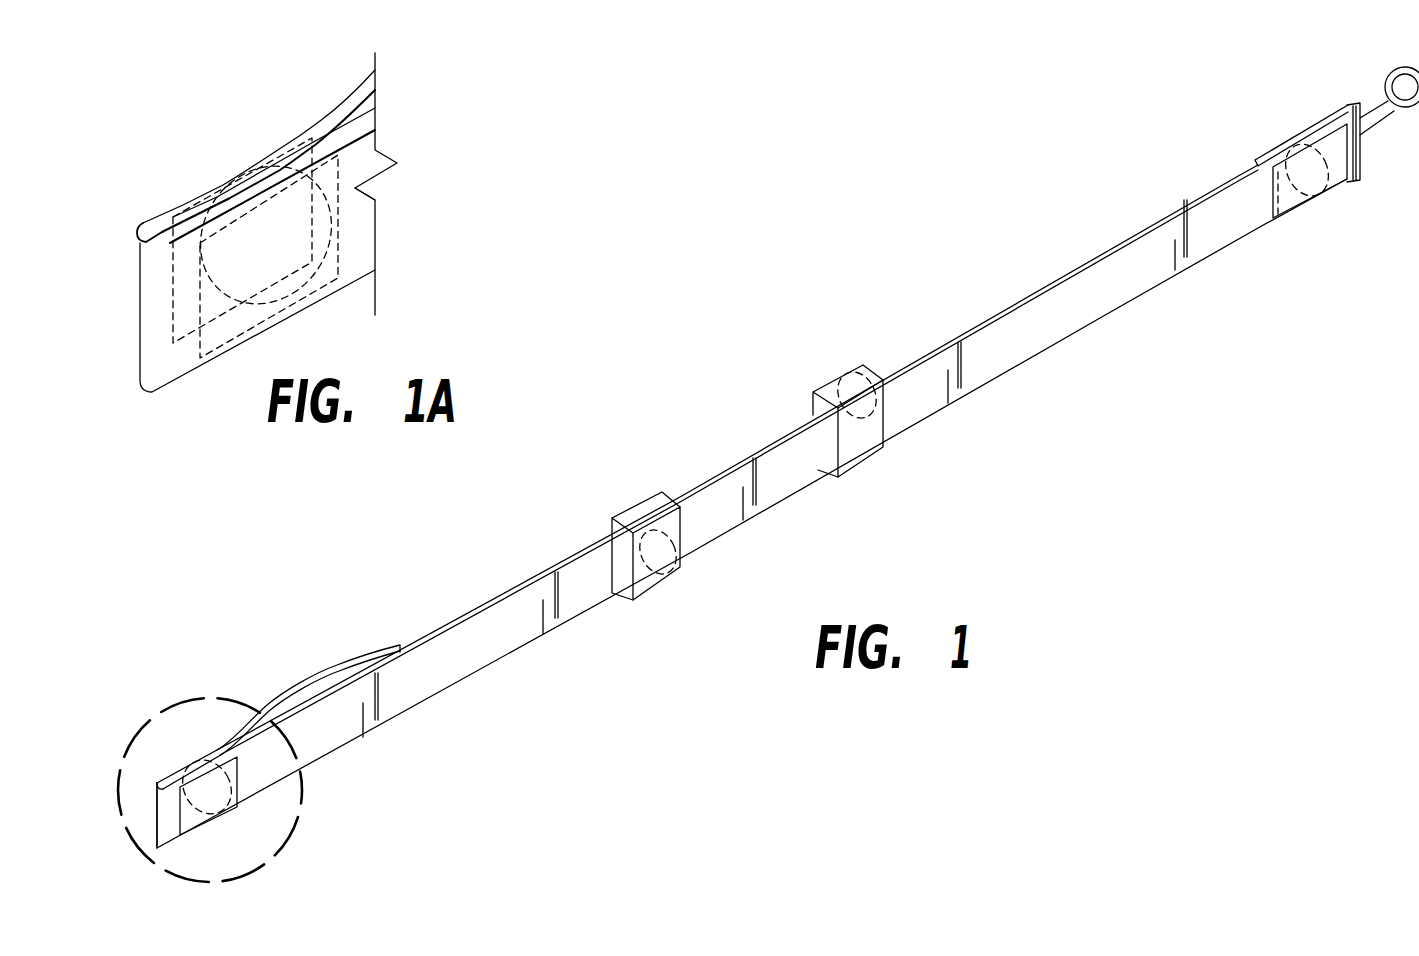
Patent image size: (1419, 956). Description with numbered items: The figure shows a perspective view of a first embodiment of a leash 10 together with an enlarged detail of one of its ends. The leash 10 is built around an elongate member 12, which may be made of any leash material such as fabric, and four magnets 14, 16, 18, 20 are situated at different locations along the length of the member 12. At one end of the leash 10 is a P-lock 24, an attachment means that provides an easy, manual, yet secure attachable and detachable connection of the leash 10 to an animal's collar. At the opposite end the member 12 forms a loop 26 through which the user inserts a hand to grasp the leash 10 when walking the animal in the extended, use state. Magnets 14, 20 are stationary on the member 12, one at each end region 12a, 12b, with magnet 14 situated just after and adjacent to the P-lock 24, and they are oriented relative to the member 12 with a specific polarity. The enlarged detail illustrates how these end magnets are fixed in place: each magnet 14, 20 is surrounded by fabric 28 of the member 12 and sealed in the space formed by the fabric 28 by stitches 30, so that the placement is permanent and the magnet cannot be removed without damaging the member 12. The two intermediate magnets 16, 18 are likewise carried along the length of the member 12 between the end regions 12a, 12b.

In FIG. 1, the leash 10 is at (1002, 163).
In FIG. 1, the elongate member 12 is at (1003, 305).
In FIG. 1A, the elongate member 12 is at (173, 194).
In FIG. 1, the end region 12a is at (1249, 200).
In FIG. 1, the end region 12b is at (283, 731).
In FIG. 1A, the end region 12b is at (368, 236).
In FIG. 1, the magnet 14 is at (1323, 197).
In FIG. 1, the magnet 16 is at (838, 385).
In FIG. 1, the magnet 18 is at (667, 563).
In FIG. 1, the magnet 20 is at (187, 823).
In FIG. 1A, the magnet 20 is at (327, 257).
In FIG. 1, the P-lock 24 is at (1392, 73).
In FIG. 1, the loop 26 is at (327, 670).
In FIG. 1A, the fabric 28 is at (327, 122).
In FIG. 1A, the stitches 30 is at (213, 350).